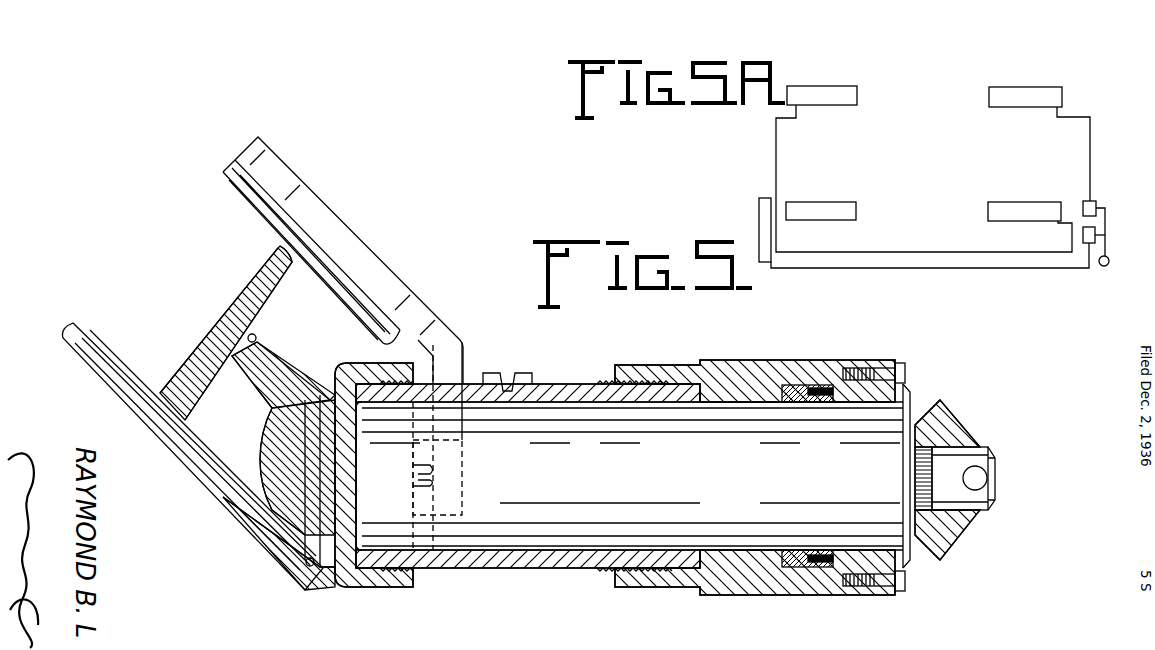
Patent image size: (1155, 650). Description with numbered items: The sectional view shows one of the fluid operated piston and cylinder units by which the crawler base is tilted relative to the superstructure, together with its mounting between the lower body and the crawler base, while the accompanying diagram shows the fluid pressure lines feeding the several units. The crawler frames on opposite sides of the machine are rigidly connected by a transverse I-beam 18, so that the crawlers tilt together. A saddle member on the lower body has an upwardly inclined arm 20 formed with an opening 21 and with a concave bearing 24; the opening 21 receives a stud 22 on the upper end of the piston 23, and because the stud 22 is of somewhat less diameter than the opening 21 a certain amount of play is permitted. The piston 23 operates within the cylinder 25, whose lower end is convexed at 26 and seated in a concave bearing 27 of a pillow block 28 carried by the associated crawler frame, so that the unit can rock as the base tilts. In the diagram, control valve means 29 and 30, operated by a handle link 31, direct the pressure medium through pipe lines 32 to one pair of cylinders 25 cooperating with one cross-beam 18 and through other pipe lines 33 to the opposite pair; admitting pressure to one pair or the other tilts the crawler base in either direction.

In FIG. 5, the transverse I-beam 18 is at (270, 288).
In FIG. 5, the upwardly inclined arm 20 is at (985, 430).
In FIG. 5, the opening 21 is at (978, 510).
In FIG. 5, the stud 22 is at (995, 467).
In FIG. 5, the piston 23 is at (903, 413).
In FIG. 5, the concave bearing 24 is at (960, 427).
In FIG. 5, the cylinder 25 is at (690, 573).
In FIG. 5A, the cylinder 25 is at (834, 92).
In FIG. 5, the convexed lower end 26 is at (263, 540).
In FIG. 5, the concave bearing 27 is at (277, 477).
In FIG. 5, the pillow block 28 is at (287, 437).
In FIG. 5A, the control valve means 29 is at (1090, 205).
In FIG. 5A, the control valve means 30 is at (1087, 243).
In FIG. 5A, the handle link 31 is at (1109, 264).
In FIG. 5A, the pipe line 32 is at (1092, 153).
In FIG. 5A, the pipe line 33 is at (776, 159).